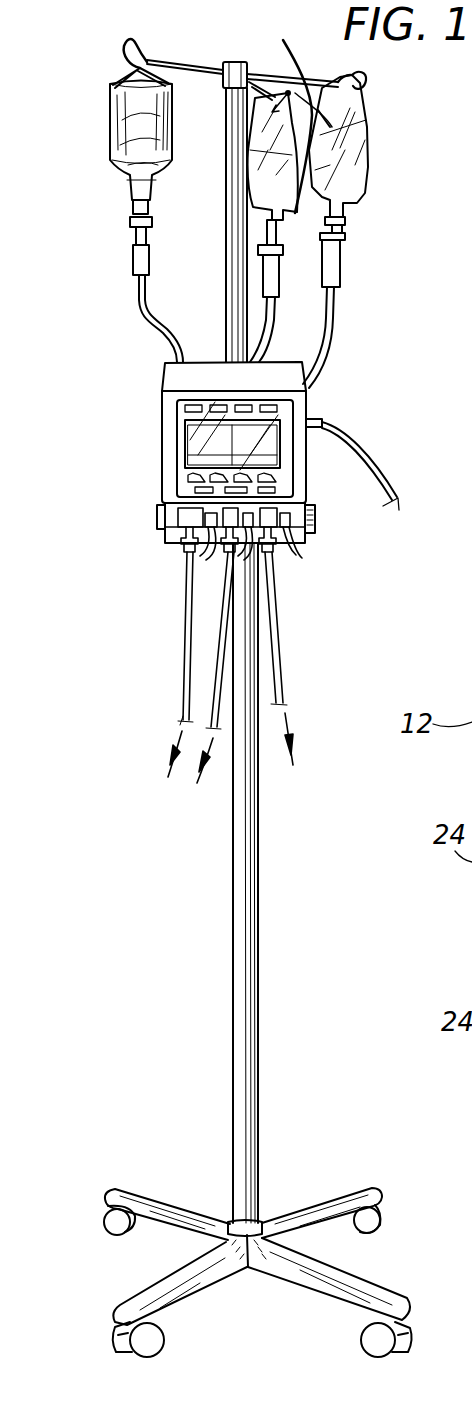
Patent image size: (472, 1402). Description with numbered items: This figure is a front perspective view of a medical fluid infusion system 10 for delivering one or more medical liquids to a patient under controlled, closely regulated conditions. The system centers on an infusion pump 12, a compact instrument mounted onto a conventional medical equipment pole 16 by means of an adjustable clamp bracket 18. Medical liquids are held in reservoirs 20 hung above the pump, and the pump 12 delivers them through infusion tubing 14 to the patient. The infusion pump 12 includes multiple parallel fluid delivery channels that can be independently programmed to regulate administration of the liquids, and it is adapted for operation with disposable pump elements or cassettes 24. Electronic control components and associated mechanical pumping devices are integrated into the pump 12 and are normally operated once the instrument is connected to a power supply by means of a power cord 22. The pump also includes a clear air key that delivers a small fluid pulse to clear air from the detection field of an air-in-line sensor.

The medical fluid infusion system 10 is at (127, 397).
The infusion pump 12 is at (167, 467).
The infusion tubing 14 is at (218, 680).
The medical equipment pole 16 is at (243, 892).
The adjustable clamp bracket 18 is at (310, 530).
The reservoirs 20 is at (112, 110).
The power cord 22 is at (330, 427).
The cassettes 24 is at (228, 522).